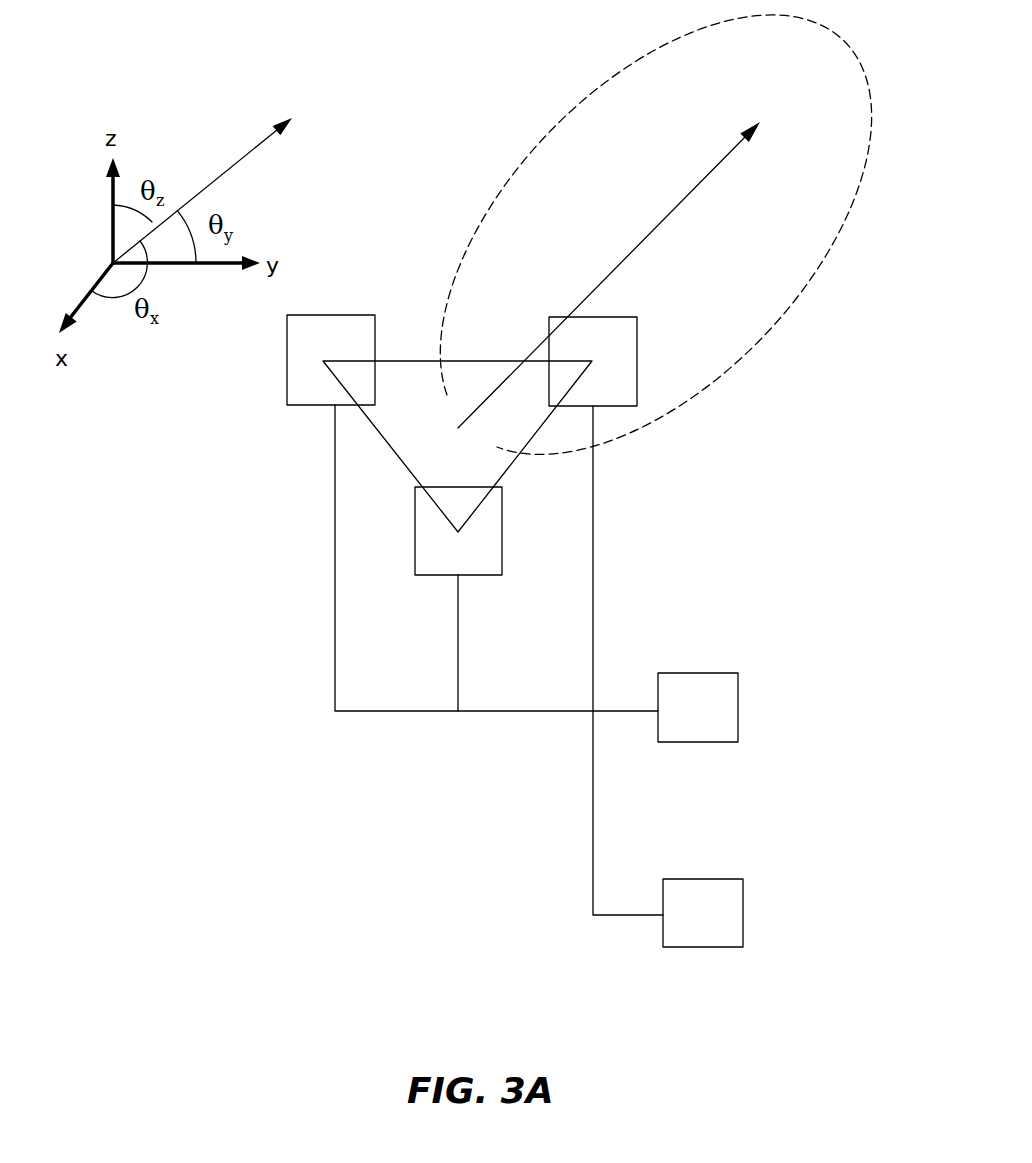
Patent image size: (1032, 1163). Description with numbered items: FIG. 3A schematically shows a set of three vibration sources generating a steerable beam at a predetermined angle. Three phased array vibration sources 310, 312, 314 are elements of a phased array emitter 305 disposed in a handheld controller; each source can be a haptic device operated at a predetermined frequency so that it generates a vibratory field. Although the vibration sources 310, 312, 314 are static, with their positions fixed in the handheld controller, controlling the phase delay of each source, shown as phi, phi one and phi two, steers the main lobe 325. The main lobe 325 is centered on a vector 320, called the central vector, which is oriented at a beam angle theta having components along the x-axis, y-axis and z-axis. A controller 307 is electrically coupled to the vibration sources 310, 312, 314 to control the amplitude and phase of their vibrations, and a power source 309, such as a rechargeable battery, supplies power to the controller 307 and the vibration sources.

The phased array emitter 305 is at (290, 548).
The controller 307 is at (738, 711).
The power source 309 is at (743, 910).
The phased array vibration source 310 is at (502, 530).
The phased array vibration source 312 is at (287, 362).
The phased array vibration source 314 is at (637, 337).
The vector 320 is at (258, 143).
The main lobe 325 is at (830, 258).